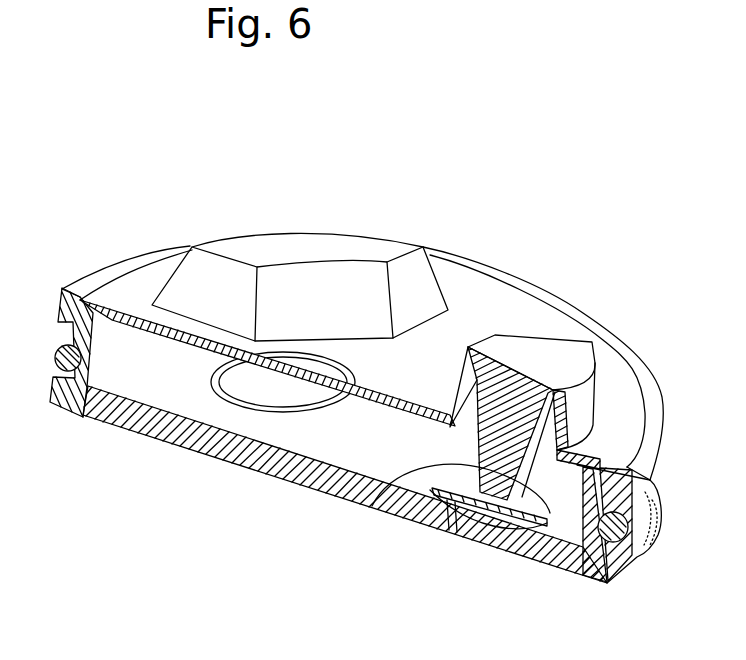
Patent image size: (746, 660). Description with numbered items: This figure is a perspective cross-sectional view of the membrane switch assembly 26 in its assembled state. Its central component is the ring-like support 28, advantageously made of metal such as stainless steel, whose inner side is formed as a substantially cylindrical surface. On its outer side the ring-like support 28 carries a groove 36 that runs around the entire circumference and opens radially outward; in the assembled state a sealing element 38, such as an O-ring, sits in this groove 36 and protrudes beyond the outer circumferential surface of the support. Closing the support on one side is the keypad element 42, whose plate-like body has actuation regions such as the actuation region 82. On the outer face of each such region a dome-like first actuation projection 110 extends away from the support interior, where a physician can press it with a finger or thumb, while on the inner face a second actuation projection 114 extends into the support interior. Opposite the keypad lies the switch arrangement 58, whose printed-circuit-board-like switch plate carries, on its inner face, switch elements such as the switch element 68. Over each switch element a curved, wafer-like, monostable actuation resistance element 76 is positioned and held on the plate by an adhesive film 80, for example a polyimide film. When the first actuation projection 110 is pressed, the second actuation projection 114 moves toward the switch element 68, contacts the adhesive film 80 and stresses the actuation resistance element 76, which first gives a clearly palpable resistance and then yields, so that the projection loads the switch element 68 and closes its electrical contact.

The membrane switch assembly 26 is at (522, 102).
The ring-like support 28 is at (607, 326).
The groove 36 is at (630, 550).
The sealing element 38 is at (47, 361).
The keypad element 42 is at (490, 300).
The switch arrangement 58 is at (230, 467).
The switch element 68 is at (497, 547).
The actuation resistance element 76 is at (444, 501).
The adhesive film 80 is at (165, 392).
The actuation region 82 is at (280, 247).
The first actuation projection 110 is at (546, 328).
The second actuation projection 114 is at (370, 504).